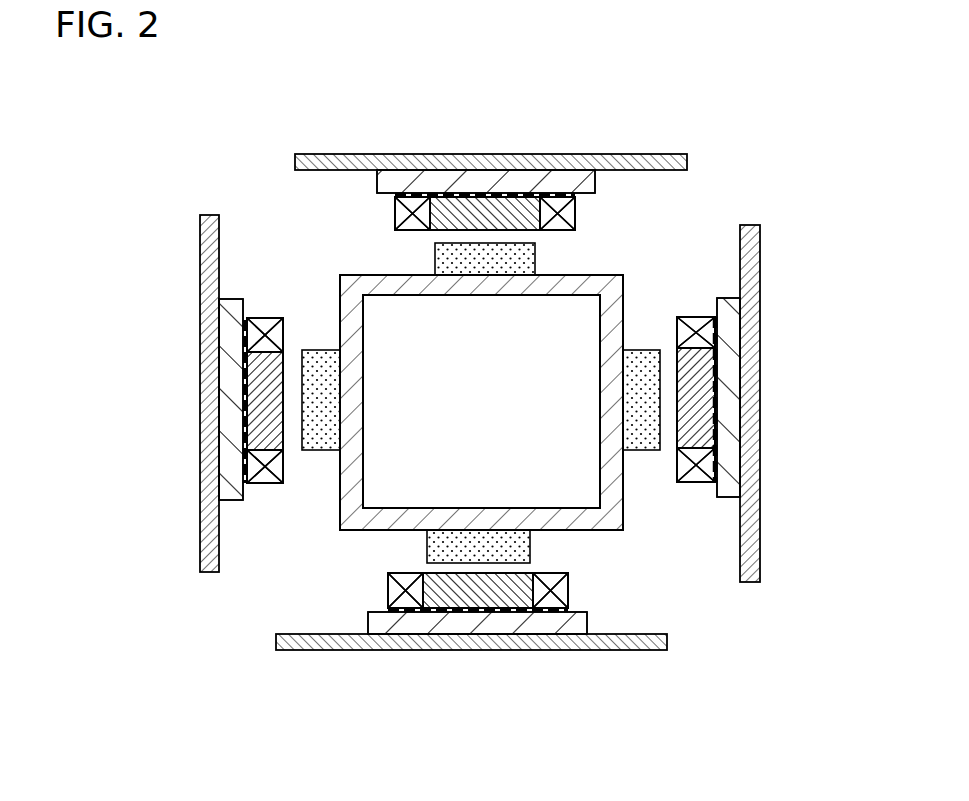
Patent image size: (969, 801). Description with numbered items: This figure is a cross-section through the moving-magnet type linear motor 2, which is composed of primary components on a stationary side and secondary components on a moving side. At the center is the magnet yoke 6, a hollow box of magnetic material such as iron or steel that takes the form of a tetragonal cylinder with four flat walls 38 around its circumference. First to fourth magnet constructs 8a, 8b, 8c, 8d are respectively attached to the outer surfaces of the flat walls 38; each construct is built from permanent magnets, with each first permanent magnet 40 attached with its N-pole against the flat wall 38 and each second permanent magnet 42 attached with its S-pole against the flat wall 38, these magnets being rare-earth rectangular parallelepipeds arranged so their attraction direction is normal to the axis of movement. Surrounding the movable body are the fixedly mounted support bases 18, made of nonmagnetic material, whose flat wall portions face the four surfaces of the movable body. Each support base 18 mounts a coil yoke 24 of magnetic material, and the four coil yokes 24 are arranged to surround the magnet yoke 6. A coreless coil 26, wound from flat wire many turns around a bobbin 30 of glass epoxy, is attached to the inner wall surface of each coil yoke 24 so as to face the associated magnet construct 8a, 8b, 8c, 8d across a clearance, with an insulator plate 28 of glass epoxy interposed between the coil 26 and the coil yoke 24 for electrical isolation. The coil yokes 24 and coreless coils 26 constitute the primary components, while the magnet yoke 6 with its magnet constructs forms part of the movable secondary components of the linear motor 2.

The linear motor 2 is at (226, 150).
The magnet yoke 6 is at (421, 288).
The first magnet construct 8a is at (575, 250).
The second magnet construct 8b is at (655, 497).
The third magnet construct 8c is at (370, 555).
The fourth magnet construct 8d is at (304, 316).
The support base 18 is at (455, 153).
The coil yoke 24 is at (522, 182).
The coreless coil 26 is at (413, 212).
The insulator plate 28 is at (558, 192).
The bobbin 30 is at (478, 210).
The flat wall 38 is at (610, 349).
The first permanent magnet 40 is at (330, 421).
The second permanent magnet 42 is at (507, 262).